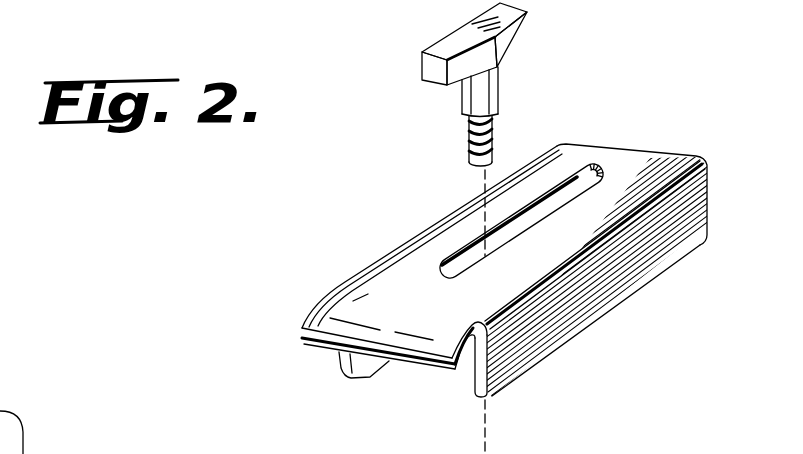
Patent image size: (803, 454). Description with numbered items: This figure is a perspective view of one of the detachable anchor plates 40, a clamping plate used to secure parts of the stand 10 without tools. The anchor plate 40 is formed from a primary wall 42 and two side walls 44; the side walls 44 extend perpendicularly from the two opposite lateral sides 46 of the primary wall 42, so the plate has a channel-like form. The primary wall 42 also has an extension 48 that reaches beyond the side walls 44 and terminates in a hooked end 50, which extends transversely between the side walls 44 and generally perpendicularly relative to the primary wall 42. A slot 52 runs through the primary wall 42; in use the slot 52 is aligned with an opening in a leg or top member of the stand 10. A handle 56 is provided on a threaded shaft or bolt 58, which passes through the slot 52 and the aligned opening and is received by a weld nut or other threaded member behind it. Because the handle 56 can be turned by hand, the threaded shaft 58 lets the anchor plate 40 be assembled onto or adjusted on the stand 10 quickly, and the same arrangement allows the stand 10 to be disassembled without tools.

The stand 10 is at (378, 284).
The detachable anchor plate 40 is at (618, 294).
The primary wall 42 is at (646, 168).
The side walls 44 is at (362, 370).
The lateral sides 46 is at (413, 240).
The extension 48 is at (464, 328).
The hooked end 50 is at (463, 356).
The slot 52 is at (547, 202).
The handle 56 is at (461, 40).
The threaded shaft or bolt 58 is at (473, 141).